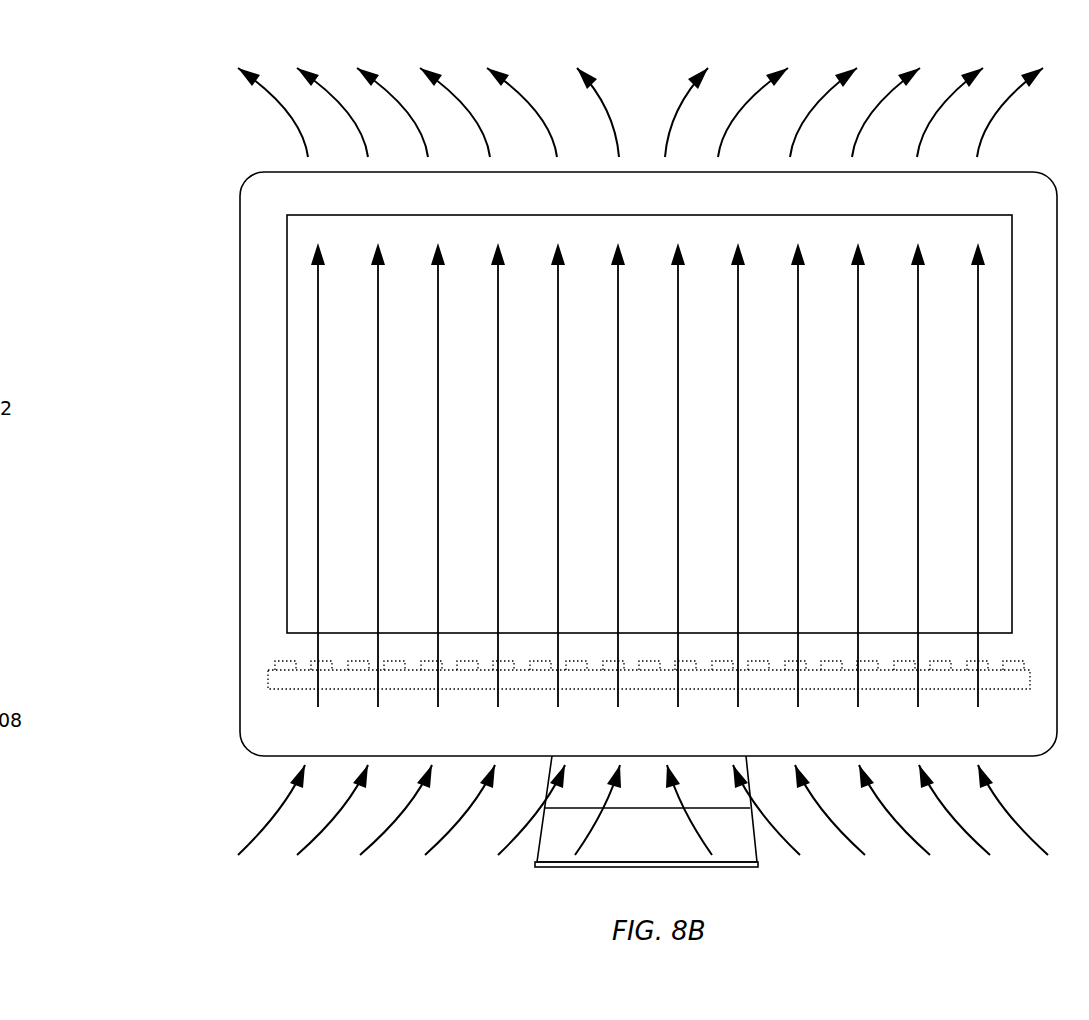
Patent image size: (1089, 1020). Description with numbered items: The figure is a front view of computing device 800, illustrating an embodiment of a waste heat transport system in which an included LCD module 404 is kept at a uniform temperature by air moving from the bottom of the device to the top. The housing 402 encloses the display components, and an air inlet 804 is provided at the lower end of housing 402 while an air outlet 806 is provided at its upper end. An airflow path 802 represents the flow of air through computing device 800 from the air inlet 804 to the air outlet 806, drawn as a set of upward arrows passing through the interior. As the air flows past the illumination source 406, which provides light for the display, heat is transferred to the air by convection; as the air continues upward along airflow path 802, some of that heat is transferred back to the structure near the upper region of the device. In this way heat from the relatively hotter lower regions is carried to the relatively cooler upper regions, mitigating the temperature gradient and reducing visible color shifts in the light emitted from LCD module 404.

The computing device 800 is at (222, 142).
The housing 402 is at (240, 327).
The LCD module 404 is at (287, 426).
The illumination source 406 is at (268, 681).
The airflow path 802 is at (318, 507).
The air inlet 804 is at (300, 756).
The air outlet 806 is at (300, 170).